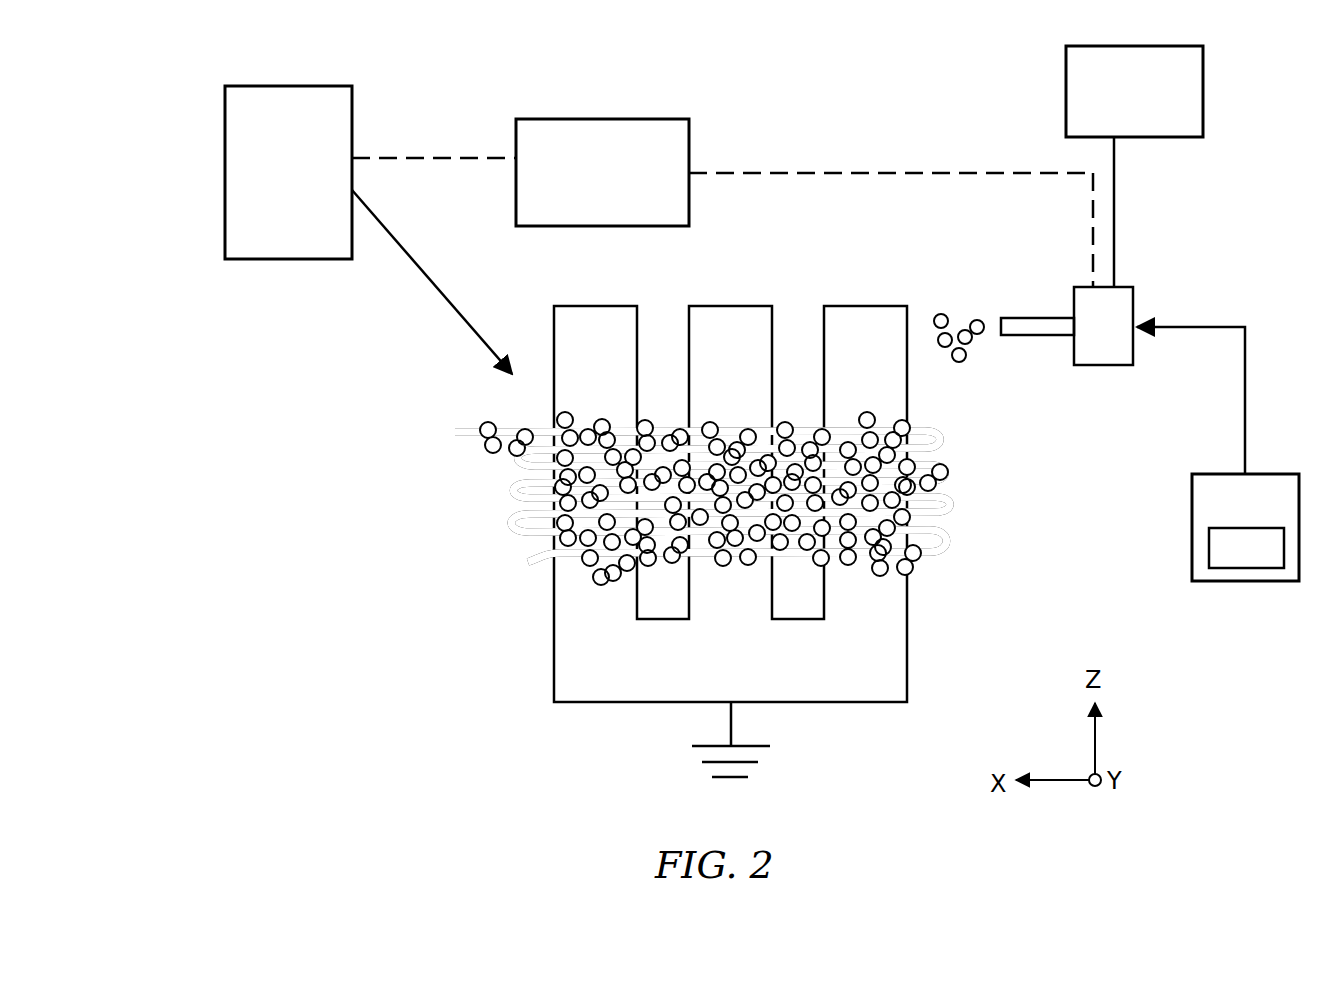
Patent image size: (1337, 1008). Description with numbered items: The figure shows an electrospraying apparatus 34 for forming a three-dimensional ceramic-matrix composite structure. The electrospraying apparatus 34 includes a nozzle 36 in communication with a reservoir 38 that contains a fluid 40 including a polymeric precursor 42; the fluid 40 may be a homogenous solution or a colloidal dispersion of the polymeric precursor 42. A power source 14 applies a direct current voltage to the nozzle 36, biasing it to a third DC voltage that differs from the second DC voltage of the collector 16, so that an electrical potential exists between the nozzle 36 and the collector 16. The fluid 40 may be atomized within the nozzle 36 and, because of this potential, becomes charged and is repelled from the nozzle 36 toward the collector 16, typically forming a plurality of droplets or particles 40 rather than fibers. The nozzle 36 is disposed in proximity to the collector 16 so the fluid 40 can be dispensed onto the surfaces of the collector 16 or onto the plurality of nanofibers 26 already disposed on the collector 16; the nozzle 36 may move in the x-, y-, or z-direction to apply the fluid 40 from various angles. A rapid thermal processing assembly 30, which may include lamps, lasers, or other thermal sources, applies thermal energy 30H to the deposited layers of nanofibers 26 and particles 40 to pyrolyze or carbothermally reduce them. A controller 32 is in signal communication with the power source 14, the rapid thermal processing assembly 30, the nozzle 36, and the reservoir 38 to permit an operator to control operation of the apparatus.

The power source 14 is at (1066, 70).
The collector 16 is at (823, 703).
The plurality of nanofibers 26 is at (518, 540).
The rapid thermal processing assembly 30 is at (225, 152).
The thermal energy 30H is at (430, 282).
The controller 32 is at (689, 137).
The electrospraying apparatus 34 is at (1162, 280).
The nozzle 36 is at (1030, 318).
The reservoir 38 is at (1220, 582).
The fluid 40 is at (950, 305).
The polymeric precursor 42 is at (1246, 548).